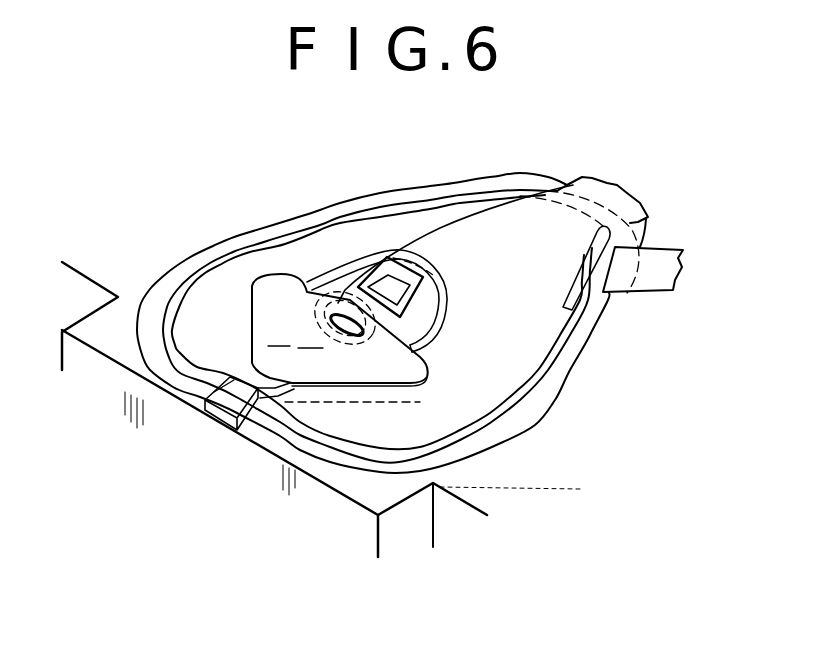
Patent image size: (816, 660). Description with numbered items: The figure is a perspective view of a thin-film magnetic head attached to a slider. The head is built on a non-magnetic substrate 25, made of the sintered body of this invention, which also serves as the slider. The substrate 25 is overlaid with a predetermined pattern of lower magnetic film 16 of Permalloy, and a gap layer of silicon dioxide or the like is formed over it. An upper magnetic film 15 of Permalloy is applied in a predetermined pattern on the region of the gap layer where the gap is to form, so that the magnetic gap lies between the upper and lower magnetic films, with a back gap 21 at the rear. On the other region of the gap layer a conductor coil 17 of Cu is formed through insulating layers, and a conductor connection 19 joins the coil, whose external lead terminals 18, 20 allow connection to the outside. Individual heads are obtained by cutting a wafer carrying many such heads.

The upper magnetic film 15 is at (252, 296).
The lower magnetic film 16 is at (400, 403).
The conductor coil 17 is at (543, 380).
The external lead terminal 18 is at (642, 293).
The conductor connection 19 is at (418, 340).
The external lead terminal 20 is at (443, 270).
The back gap 21 is at (340, 312).
The non-magnetic substrate 25 is at (334, 494).